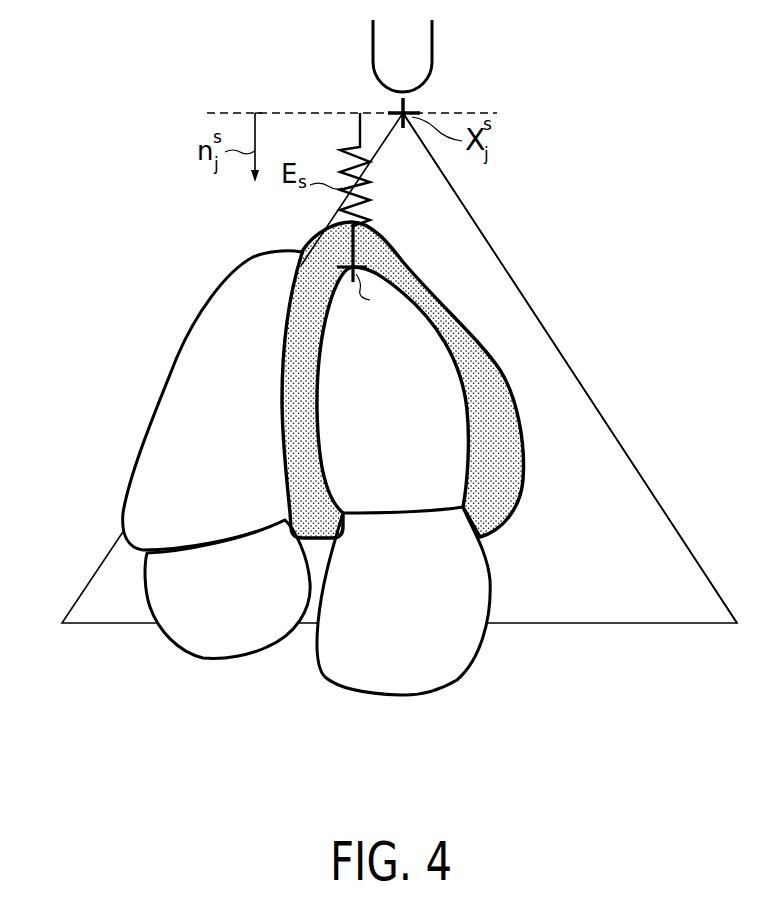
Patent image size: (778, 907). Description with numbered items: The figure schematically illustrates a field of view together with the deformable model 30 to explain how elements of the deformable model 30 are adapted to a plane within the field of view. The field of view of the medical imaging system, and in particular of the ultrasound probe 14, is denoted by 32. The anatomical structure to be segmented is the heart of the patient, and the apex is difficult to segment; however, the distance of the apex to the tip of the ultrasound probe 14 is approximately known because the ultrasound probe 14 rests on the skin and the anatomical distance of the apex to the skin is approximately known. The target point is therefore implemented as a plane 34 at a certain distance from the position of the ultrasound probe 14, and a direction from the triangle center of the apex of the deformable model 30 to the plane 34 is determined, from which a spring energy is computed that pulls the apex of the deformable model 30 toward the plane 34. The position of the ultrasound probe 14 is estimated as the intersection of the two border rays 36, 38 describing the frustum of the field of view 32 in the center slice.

The ultrasound probe 14 is at (422, 40).
The deformable model 30 is at (273, 458).
The field of view 32 is at (657, 518).
The plane 34 is at (268, 110).
The border ray 36 is at (543, 322).
The border ray 38 is at (100, 573).